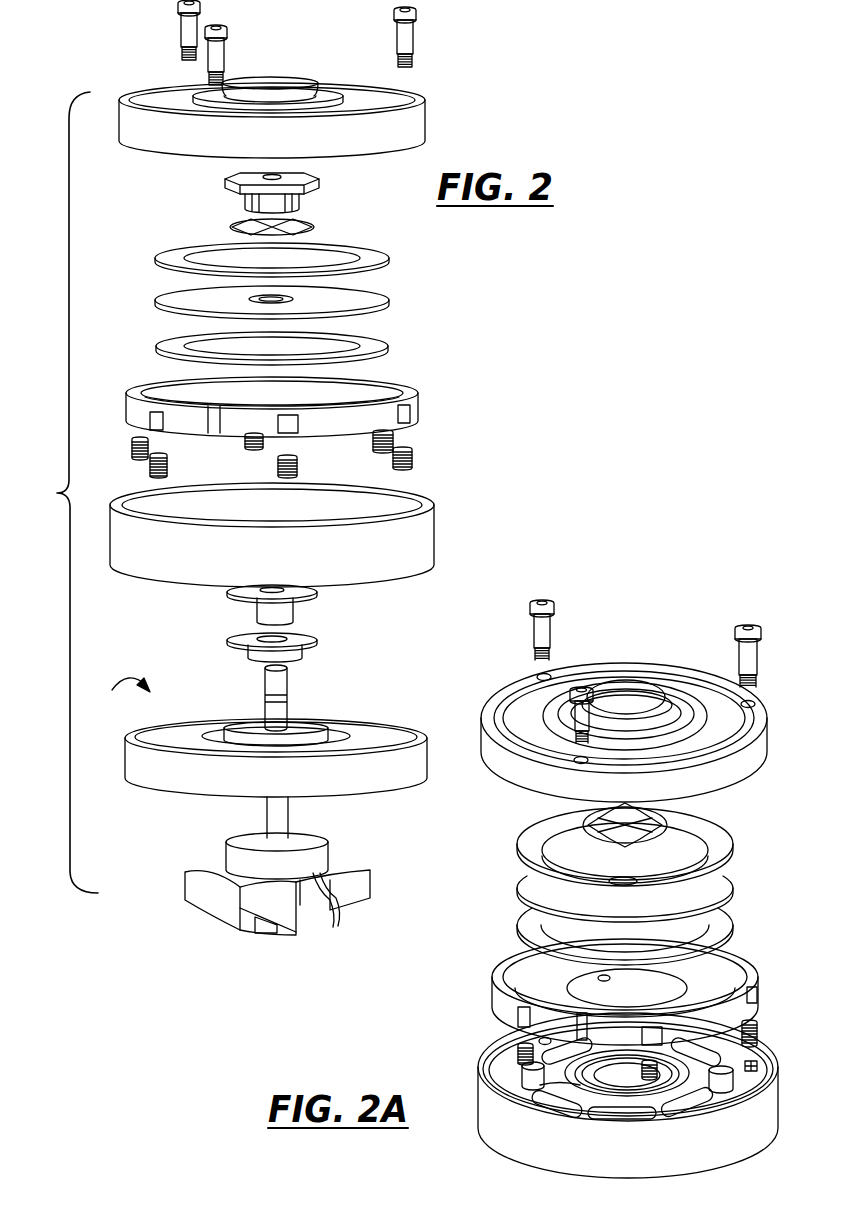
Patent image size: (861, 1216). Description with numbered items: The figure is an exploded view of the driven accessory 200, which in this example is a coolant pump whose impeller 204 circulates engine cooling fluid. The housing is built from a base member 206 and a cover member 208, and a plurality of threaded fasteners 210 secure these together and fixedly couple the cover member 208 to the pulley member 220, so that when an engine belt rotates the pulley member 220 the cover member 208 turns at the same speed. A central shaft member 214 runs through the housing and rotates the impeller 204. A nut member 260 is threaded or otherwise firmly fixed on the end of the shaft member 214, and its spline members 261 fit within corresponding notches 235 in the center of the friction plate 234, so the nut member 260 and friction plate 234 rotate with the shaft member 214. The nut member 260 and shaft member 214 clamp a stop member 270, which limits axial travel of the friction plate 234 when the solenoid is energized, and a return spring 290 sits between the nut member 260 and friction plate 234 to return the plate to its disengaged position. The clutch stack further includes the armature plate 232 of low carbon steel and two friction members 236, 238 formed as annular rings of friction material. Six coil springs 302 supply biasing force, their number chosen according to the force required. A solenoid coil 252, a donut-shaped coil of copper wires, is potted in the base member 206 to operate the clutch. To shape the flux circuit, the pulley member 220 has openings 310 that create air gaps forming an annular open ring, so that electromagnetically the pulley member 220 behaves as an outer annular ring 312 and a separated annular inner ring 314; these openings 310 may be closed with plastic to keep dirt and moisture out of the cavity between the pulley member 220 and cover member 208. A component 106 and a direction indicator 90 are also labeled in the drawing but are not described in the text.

In FIG. 2, the driven accessory 200 is at (59, 492).
In FIG. 2, the threaded fasteners 210 is at (182, 31).
In FIG. 2A, the threaded fasteners 210 is at (535, 636).
In FIG. 2, the cover member 208 is at (152, 89).
In FIG. 2A, the cover member 208 is at (511, 697).
In FIG. 2, the nut member 260 is at (312, 182).
In FIG. 2A, the nut member 260 is at (667, 816).
In FIG. 2, the spline members 261 is at (245, 206).
In FIG. 2, the return spring 290 is at (315, 225).
In FIG. 2, the friction member 238 is at (172, 255).
In FIG. 2A, the friction member 238 is at (530, 845).
In FIG. 2, the friction plate 234 is at (160, 302).
In FIG. 2A, the friction plate 234 is at (525, 891).
In FIG. 2, the notches 235 is at (300, 297).
In FIG. 2, the friction member 236 is at (165, 349).
In FIG. 2A, the friction member 236 is at (528, 931).
In FIG. 2, the armature plate 232 is at (130, 410).
In FIG. 2A, the armature plate 232 is at (492, 988).
In FIG. 2, the coil springs 302 is at (278, 466).
In FIG. 2A, the coil springs 302 is at (510, 1049).
In FIG. 2, the pulley member 220 is at (138, 570).
In FIG. 2A, the pulley member 220 is at (498, 1133).
In FIG. 2, the stop member 270 is at (285, 611).
In FIG. 2, the washer 106 is at (242, 642).
In FIG. 2, the central shaft member 214 is at (285, 681).
In FIG. 2, the rotation direction 90 is at (125, 696).
In FIG. 2, the base member 206 is at (143, 770).
In FIG. 2, the solenoid coil 252 is at (372, 729).
In FIG. 2, the impeller 204 is at (188, 881).
In FIG. 2A, the outer annular ring 312 is at (752, 1065).
In FIG. 2A, the openings 310 is at (530, 1084).
In FIG. 2A, the annular inner ring 314 is at (558, 1086).